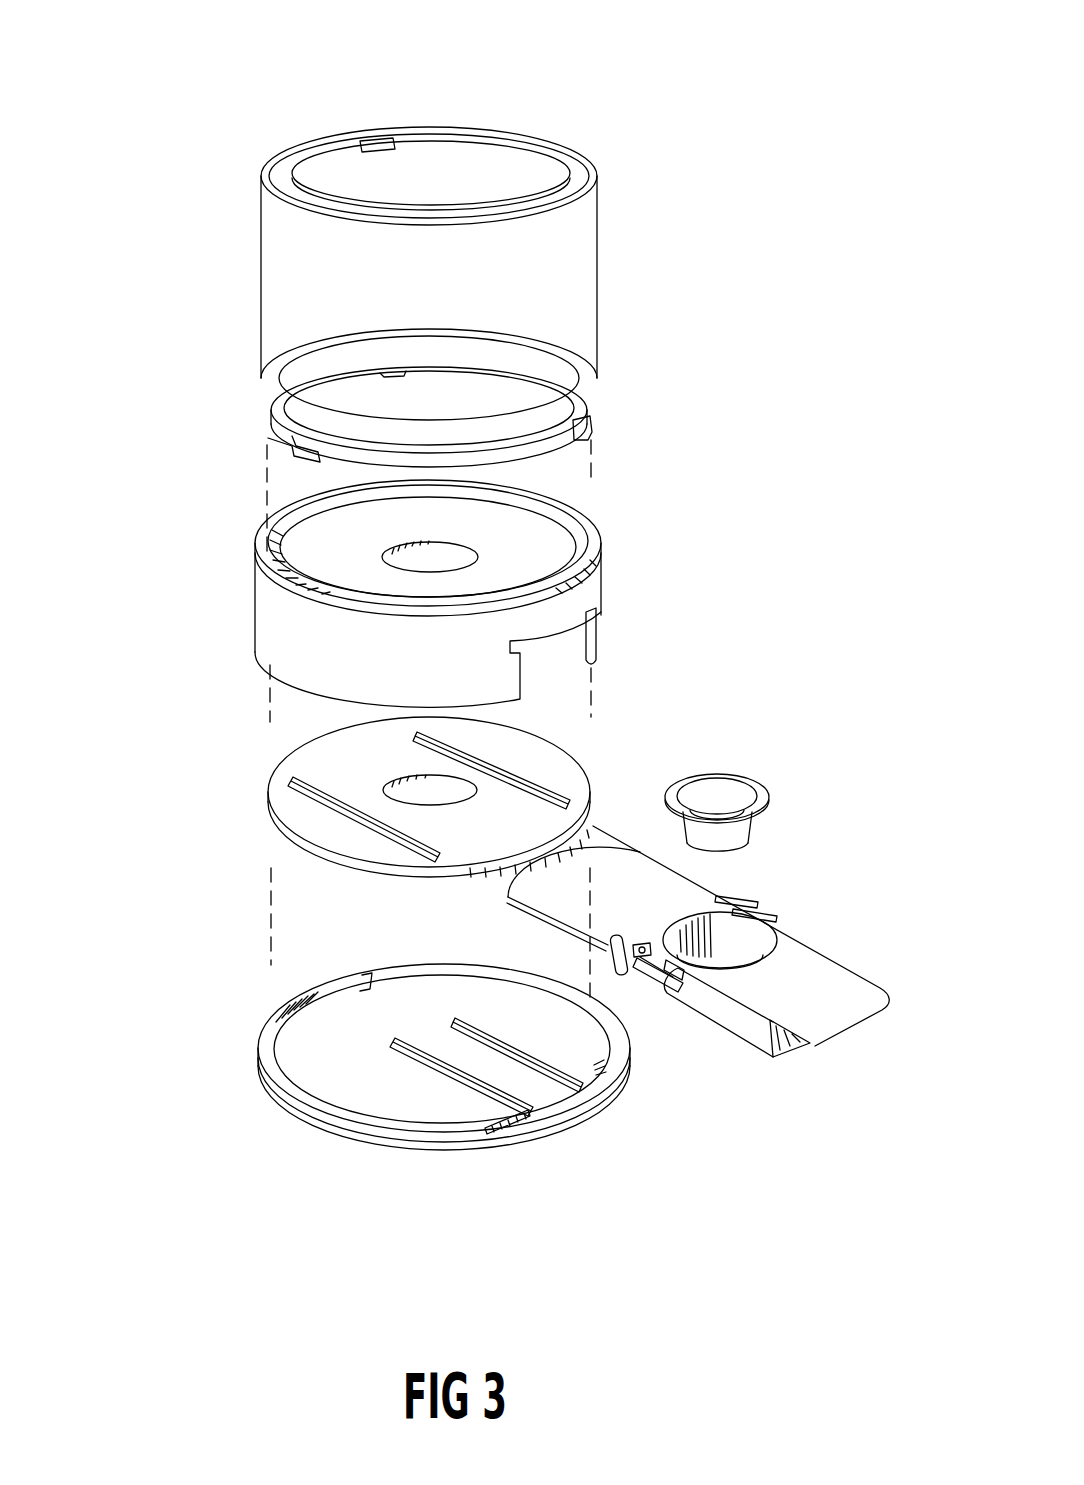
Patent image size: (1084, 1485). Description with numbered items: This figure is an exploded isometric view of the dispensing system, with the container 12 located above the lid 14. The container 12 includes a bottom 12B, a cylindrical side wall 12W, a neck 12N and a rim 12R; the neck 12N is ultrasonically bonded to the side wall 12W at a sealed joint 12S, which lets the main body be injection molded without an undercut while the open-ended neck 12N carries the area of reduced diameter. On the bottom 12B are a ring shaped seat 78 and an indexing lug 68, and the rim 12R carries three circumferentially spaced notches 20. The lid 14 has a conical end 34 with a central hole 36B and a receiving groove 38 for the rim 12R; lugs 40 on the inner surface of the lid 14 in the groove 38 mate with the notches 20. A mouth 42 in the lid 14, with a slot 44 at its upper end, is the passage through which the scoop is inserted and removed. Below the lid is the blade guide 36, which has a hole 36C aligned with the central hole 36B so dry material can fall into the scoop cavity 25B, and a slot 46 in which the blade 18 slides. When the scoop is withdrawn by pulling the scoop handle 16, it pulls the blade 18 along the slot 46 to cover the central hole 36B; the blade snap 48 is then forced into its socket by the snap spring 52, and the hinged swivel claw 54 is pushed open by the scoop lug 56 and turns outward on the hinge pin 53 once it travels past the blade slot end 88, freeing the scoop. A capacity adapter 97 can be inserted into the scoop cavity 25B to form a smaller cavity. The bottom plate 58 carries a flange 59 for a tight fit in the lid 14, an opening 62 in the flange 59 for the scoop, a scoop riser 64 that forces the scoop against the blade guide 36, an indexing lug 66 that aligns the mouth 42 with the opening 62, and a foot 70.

The container 12 is at (463, 217).
The bottom 12B is at (477, 168).
The cylindrical side wall 12W is at (597, 222).
The sealed joint 12S is at (466, 391).
The neck 12N is at (590, 418).
The rim 12R is at (593, 428).
The ring shaped seat 78 is at (297, 158).
The indexing lug 68 is at (363, 138).
The notches 20 is at (270, 437).
The lid 14 is at (466, 579).
The conical end 34 is at (330, 543).
The receiving groove 38 is at (255, 552).
The central hole 36B is at (485, 556).
The lugs 40 is at (592, 560).
The slot 44 is at (603, 612).
The mouth 42 is at (560, 660).
The blade guide 36 is at (342, 825).
The hole 36C is at (395, 785).
The slot 46 is at (410, 842).
The blade slot end 88 is at (400, 875).
The capacity adapter 97 is at (730, 790).
The blade 18 is at (573, 898).
The scoop handle 16 is at (765, 941).
The scoop cavity 25B is at (735, 948).
The blade snap 48 is at (730, 895).
The snap spring 52 is at (626, 965).
The hinge pin 53 is at (648, 945).
The hinged swivel claw 54 is at (647, 960).
The scoop lug 56 is at (675, 975).
The bottom plate 58 is at (371, 1140).
The indexing lug 66 is at (367, 978).
The scoop riser 64 is at (445, 1065).
The foot 70 is at (350, 1140).
The flange 59 is at (490, 1135).
The opening 62 is at (562, 1102).